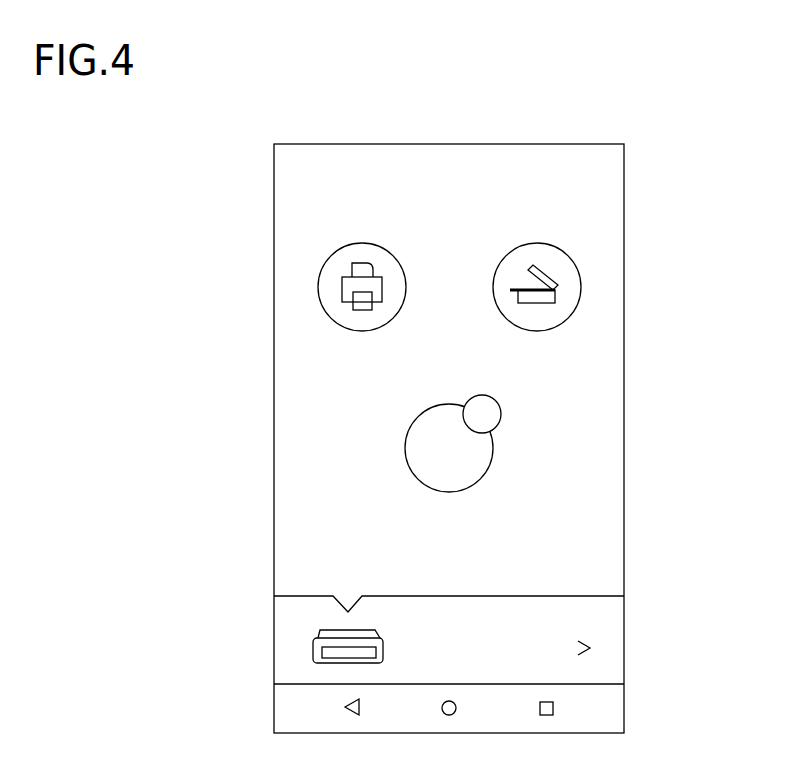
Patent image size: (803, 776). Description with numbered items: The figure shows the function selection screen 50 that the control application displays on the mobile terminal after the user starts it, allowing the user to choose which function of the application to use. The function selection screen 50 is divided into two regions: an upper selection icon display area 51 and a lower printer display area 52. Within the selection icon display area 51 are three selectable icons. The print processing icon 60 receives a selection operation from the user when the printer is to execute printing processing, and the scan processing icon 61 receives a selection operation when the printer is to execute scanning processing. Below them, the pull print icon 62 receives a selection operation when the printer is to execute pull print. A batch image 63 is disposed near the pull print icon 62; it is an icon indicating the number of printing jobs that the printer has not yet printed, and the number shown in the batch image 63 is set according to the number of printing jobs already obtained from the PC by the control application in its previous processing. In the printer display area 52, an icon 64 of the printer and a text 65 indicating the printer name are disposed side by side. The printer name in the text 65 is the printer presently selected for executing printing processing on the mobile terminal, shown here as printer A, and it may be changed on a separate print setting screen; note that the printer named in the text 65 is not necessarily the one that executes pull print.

The function selection screen 50 is at (483, 147).
The selection icon display area 51 is at (613, 326).
The printer display area 52 is at (612, 614).
The print processing icon 60 is at (375, 245).
The scan processing icon 61 is at (538, 243).
The pull print icon 62 is at (405, 465).
The batch image 63 is at (497, 407).
The icon of the printer 64 is at (313, 651).
The text indicating the printer name 65 is at (593, 655).